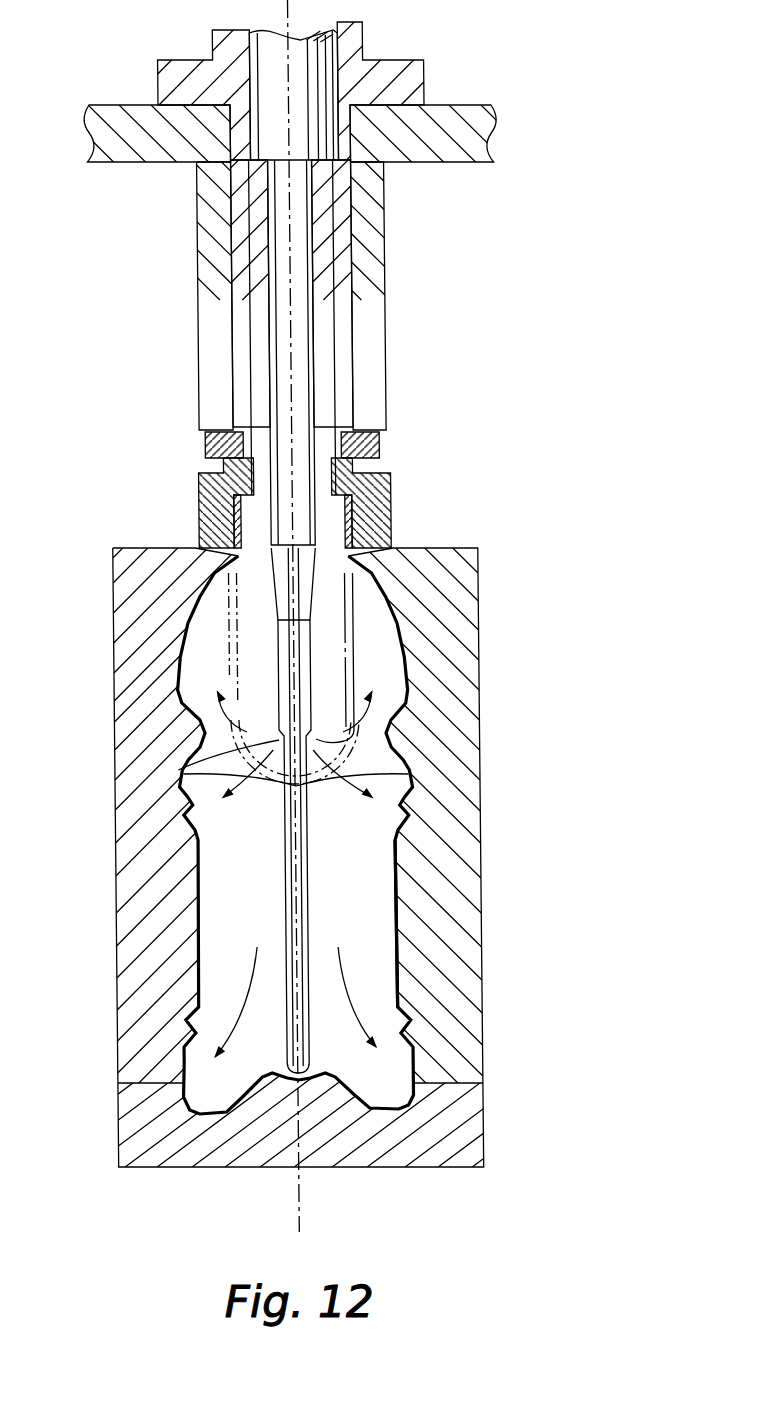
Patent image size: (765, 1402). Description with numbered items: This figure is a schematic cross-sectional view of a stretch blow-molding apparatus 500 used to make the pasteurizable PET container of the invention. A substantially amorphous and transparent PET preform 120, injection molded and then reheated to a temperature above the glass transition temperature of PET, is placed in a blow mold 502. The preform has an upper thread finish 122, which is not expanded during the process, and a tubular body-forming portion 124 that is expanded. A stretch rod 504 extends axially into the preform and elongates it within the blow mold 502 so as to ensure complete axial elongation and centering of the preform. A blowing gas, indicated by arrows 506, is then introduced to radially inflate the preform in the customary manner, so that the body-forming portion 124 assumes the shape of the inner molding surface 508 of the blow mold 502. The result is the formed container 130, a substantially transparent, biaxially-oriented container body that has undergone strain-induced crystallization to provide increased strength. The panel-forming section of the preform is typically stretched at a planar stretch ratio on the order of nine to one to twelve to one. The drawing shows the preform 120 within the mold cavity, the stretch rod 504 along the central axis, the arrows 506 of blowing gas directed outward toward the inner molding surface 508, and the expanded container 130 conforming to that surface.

The stretch blow-molding apparatus 500 is at (459, 330).
The blow mold 502 is at (475, 567).
The upper thread finish 122 is at (378, 511).
The tubular body-forming portion 124 is at (352, 632).
The PET preform 120 is at (351, 680).
The blowing gas 506 is at (176, 774).
The stretch rod 504 is at (302, 835).
The inner molding surface 508 is at (386, 957).
The container 130 is at (391, 985).